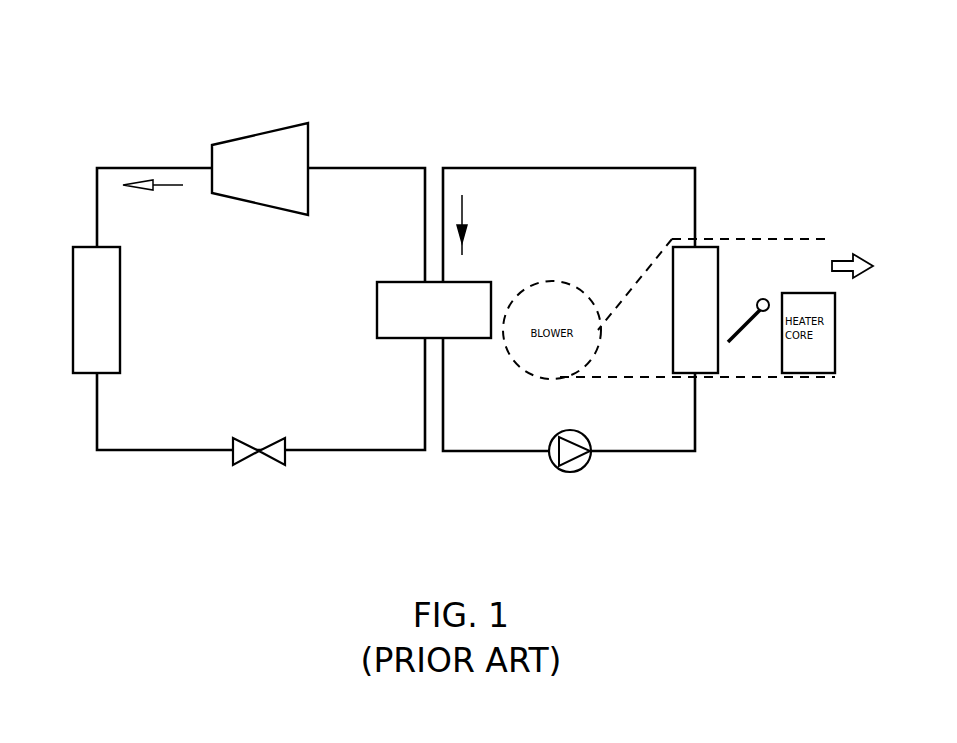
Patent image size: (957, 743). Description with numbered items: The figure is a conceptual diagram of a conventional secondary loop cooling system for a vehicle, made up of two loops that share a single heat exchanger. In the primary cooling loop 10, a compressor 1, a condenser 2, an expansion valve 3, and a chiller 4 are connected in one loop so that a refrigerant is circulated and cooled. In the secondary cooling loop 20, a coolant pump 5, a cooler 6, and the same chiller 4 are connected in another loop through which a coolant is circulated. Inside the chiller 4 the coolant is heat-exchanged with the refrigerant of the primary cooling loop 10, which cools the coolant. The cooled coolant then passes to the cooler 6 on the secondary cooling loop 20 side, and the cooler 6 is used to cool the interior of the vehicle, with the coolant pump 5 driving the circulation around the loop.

The compressor 1 is at (256, 136).
The condenser 2 is at (73, 272).
The expansion valve 3 is at (262, 467).
The chiller 4 is at (377, 308).
The coolant pump 5 is at (570, 471).
The cooler 6 is at (718, 270).
The primary cooling loop 10 is at (128, 167).
The secondary cooling loop 20 is at (578, 168).